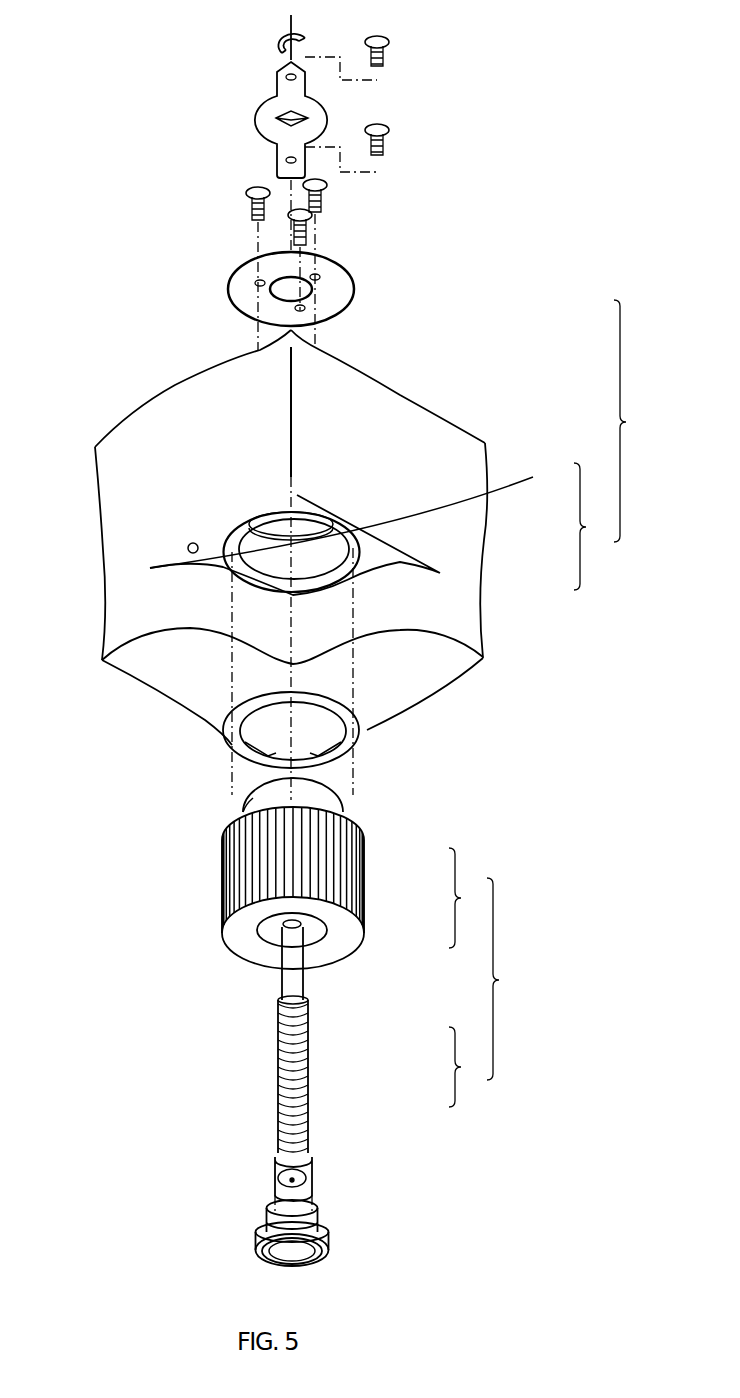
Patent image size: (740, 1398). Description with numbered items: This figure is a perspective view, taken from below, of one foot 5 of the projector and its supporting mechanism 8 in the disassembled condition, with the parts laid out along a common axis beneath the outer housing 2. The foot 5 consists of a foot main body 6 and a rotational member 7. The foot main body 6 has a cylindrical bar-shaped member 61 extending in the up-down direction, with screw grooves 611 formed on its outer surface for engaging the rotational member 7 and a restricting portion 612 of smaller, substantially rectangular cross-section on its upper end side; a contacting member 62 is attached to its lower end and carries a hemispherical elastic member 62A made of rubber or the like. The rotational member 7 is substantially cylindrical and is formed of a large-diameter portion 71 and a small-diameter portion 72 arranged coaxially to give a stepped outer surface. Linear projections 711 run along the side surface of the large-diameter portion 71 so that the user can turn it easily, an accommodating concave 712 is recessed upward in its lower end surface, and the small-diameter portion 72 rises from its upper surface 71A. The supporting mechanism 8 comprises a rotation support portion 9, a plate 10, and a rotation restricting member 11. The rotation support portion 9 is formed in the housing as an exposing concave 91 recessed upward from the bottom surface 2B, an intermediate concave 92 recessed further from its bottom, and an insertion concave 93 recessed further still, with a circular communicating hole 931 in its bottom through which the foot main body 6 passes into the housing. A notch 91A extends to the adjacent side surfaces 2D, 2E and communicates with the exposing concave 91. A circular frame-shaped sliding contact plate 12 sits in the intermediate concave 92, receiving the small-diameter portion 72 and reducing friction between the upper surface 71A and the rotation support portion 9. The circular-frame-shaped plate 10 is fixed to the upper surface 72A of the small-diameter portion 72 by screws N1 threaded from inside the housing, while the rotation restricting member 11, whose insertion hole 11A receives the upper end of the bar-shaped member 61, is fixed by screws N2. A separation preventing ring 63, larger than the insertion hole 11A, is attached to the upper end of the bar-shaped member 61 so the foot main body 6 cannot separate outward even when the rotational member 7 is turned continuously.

The outer housing 2 is at (108, 550).
The bottom surface 2B is at (443, 668).
The side surface 2D is at (155, 430).
The side surface 2E is at (357, 383).
The foot 5 is at (503, 979).
The foot main body 6 is at (465, 1067).
The rotational member 7 is at (465, 898).
The supporting mechanism 8 is at (630, 421).
The rotation support portion 9 is at (590, 526).
The plate 10 is at (340, 290).
The rotation restricting member 11 is at (317, 112).
The insertion hole 11A is at (287, 120).
The sliding contact plate 12 is at (357, 737).
The bar-shaped member 61 is at (309, 1104).
The screw grooves 611 is at (282, 1073).
The restricting portion 612 is at (285, 985).
The contacting member 62 is at (350, 1170).
The elastic member 62A is at (305, 1248).
The separation preventing ring 63 is at (308, 42).
The large-diameter portion 71 is at (291, 937).
The upper surface 71A is at (253, 812).
The linear projections 711 is at (307, 872).
The accommodating concave 712 is at (263, 943).
The small-diameter portion 72 is at (282, 870).
The upper surface 72A is at (323, 777).
The exposing concave 91 is at (380, 600).
The notch 91A is at (190, 540).
The intermediate concave 92 is at (360, 538).
The insertion concave 93 is at (567, 496).
The communicating hole 931 is at (310, 513).
The screws N1 is at (312, 216).
The screws N2 is at (383, 142).